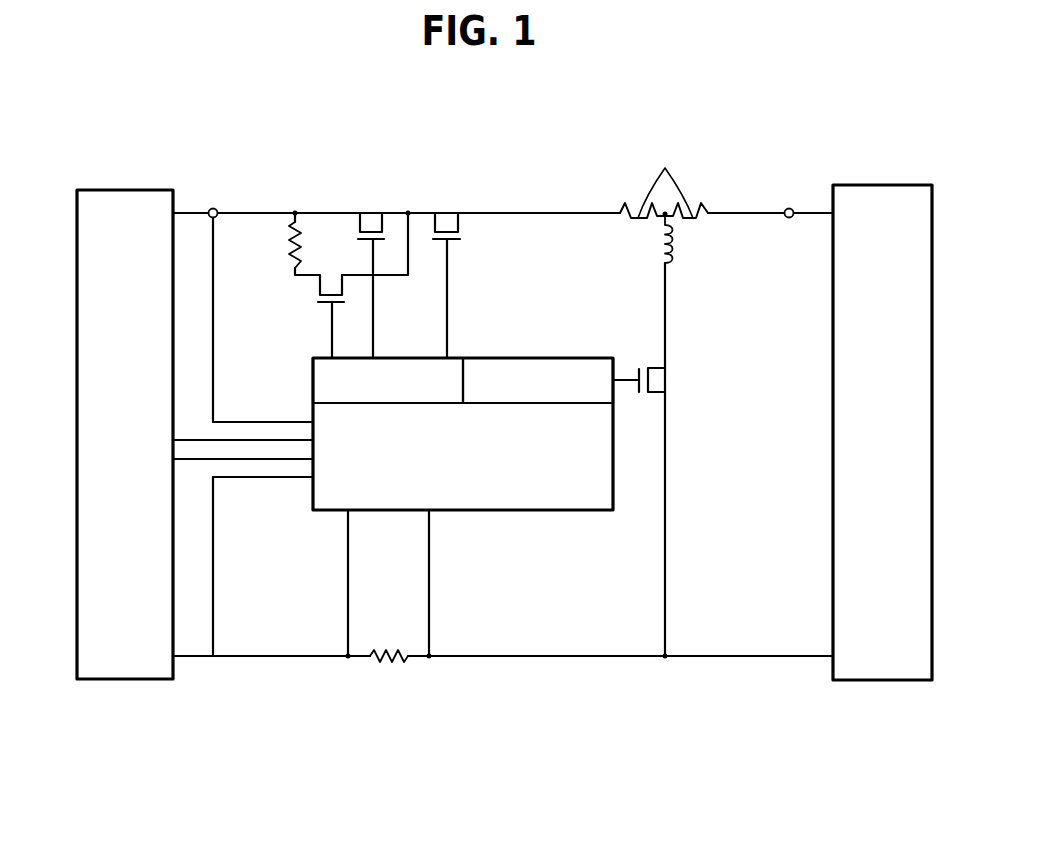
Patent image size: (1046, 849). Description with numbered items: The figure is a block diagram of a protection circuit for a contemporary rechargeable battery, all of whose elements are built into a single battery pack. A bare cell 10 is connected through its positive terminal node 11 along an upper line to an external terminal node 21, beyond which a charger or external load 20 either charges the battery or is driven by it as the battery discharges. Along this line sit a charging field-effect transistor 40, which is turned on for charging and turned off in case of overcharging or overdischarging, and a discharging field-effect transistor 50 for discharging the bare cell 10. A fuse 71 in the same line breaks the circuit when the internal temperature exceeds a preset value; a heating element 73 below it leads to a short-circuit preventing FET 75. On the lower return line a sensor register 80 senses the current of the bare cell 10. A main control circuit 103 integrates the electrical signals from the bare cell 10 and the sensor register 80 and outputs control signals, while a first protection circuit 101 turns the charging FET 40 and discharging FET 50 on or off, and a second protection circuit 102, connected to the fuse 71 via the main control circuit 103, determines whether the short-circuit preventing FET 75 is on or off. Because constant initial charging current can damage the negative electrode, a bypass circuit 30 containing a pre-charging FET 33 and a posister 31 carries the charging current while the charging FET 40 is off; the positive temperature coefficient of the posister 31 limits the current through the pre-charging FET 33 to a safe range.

The bare cell 10 is at (122, 188).
The positive terminal node of bare cell 11 is at (215, 208).
The charger or external load 20 is at (877, 185).
The external terminal node 21 is at (789, 207).
The bypass circuit 30 is at (337, 137).
The posister 31 is at (292, 228).
The pre-charging FET 33 is at (332, 283).
The charging field-effect transistor 40 is at (373, 218).
The discharging field-effect transistor 50 is at (446, 215).
The fuse 71 is at (664, 177).
The heating coil 73 is at (672, 245).
The short-circuit preventing FET 75 is at (666, 380).
The sensor register 80 is at (391, 661).
The first protection circuit 101 is at (408, 358).
The second protection circuit 102 is at (545, 358).
The main control circuit 103 is at (522, 512).